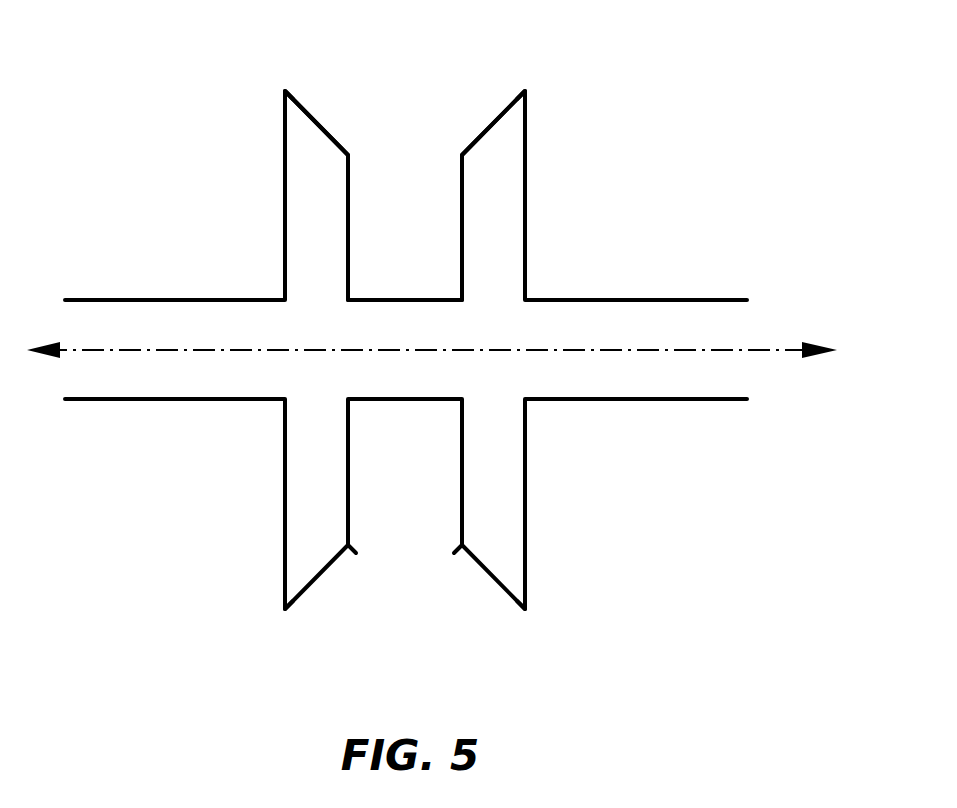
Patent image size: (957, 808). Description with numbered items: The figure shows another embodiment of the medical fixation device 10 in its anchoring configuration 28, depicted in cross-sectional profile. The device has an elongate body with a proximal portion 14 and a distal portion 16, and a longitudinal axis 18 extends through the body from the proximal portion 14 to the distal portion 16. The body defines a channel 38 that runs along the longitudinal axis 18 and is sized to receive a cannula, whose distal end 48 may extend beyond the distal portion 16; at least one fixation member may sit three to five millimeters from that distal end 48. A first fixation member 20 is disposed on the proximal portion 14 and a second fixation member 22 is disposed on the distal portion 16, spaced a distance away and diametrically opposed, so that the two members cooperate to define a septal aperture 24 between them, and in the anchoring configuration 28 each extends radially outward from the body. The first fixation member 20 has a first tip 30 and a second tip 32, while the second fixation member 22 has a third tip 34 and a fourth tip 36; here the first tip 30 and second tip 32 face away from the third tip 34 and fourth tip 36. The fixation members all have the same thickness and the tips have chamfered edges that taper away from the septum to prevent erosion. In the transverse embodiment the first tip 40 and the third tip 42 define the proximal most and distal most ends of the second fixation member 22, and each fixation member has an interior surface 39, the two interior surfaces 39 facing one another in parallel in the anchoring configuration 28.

The medical fixation device 10 is at (596, 68).
The proximal portion 14 is at (275, 280).
The distal portion 16 is at (535, 280).
The longitudinal axis 18 is at (680, 352).
The first fixation member 20 is at (293, 617).
The second fixation member 22 is at (515, 617).
The septal aperture 24 is at (353, 150).
The anchoring configuration 28 is at (527, 83).
The first tip 30 is at (282, 92).
The second tip 32 is at (284, 543).
The third tip 34 is at (528, 92).
The fourth tip 36 is at (524, 543).
The channel 38 is at (766, 325).
The interior surface 39 is at (355, 511).
The first tip 40 is at (279, 83).
The third tip 42 is at (533, 82).
The distal end of the cannula 48 is at (757, 400).